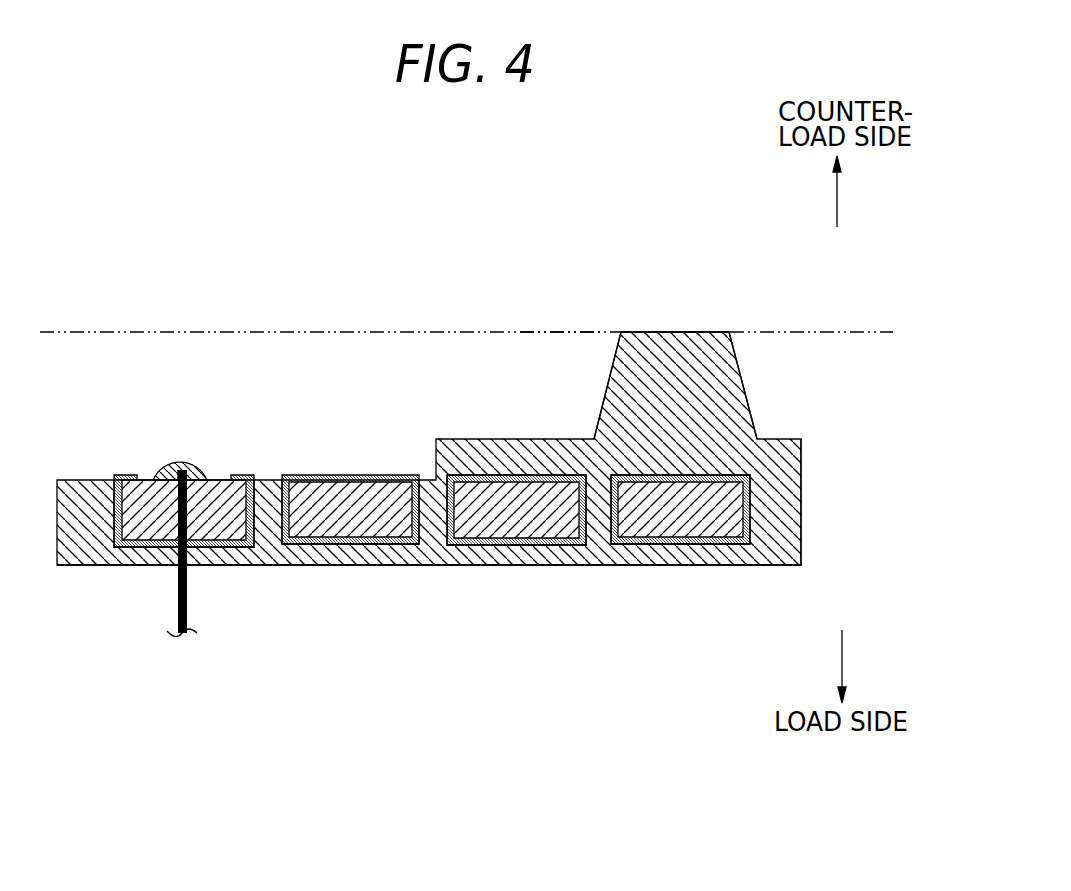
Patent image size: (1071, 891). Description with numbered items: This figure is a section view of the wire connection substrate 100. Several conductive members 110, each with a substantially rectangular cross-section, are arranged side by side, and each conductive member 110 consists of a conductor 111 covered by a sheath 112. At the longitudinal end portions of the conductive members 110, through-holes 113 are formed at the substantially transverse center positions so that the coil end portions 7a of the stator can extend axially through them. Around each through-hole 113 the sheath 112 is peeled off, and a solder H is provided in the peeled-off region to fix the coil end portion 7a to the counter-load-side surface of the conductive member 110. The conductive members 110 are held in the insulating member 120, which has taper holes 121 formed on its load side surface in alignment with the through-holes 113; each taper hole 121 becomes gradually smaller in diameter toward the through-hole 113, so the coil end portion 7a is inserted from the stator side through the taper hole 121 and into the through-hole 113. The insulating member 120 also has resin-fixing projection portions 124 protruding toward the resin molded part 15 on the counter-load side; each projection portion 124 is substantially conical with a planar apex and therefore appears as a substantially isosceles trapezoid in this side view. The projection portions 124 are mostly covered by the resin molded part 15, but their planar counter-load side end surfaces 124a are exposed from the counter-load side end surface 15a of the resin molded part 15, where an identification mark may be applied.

The coil end portion 7a is at (188, 607).
The resin molded part 15 is at (413, 350).
The counter-load side end surface 15a is at (547, 332).
The wire connection substrate 100 is at (440, 670).
The conductive member 110 is at (133, 551).
The conductor 111 is at (128, 495).
The sheath 112 is at (240, 475).
The through-hole 113 is at (201, 473).
The insulating member 120 is at (803, 476).
The taper hole 121 is at (178, 564).
The projection portion 124 is at (687, 371).
The counter-load side end surface 124a is at (668, 331).
The solder H is at (181, 463).